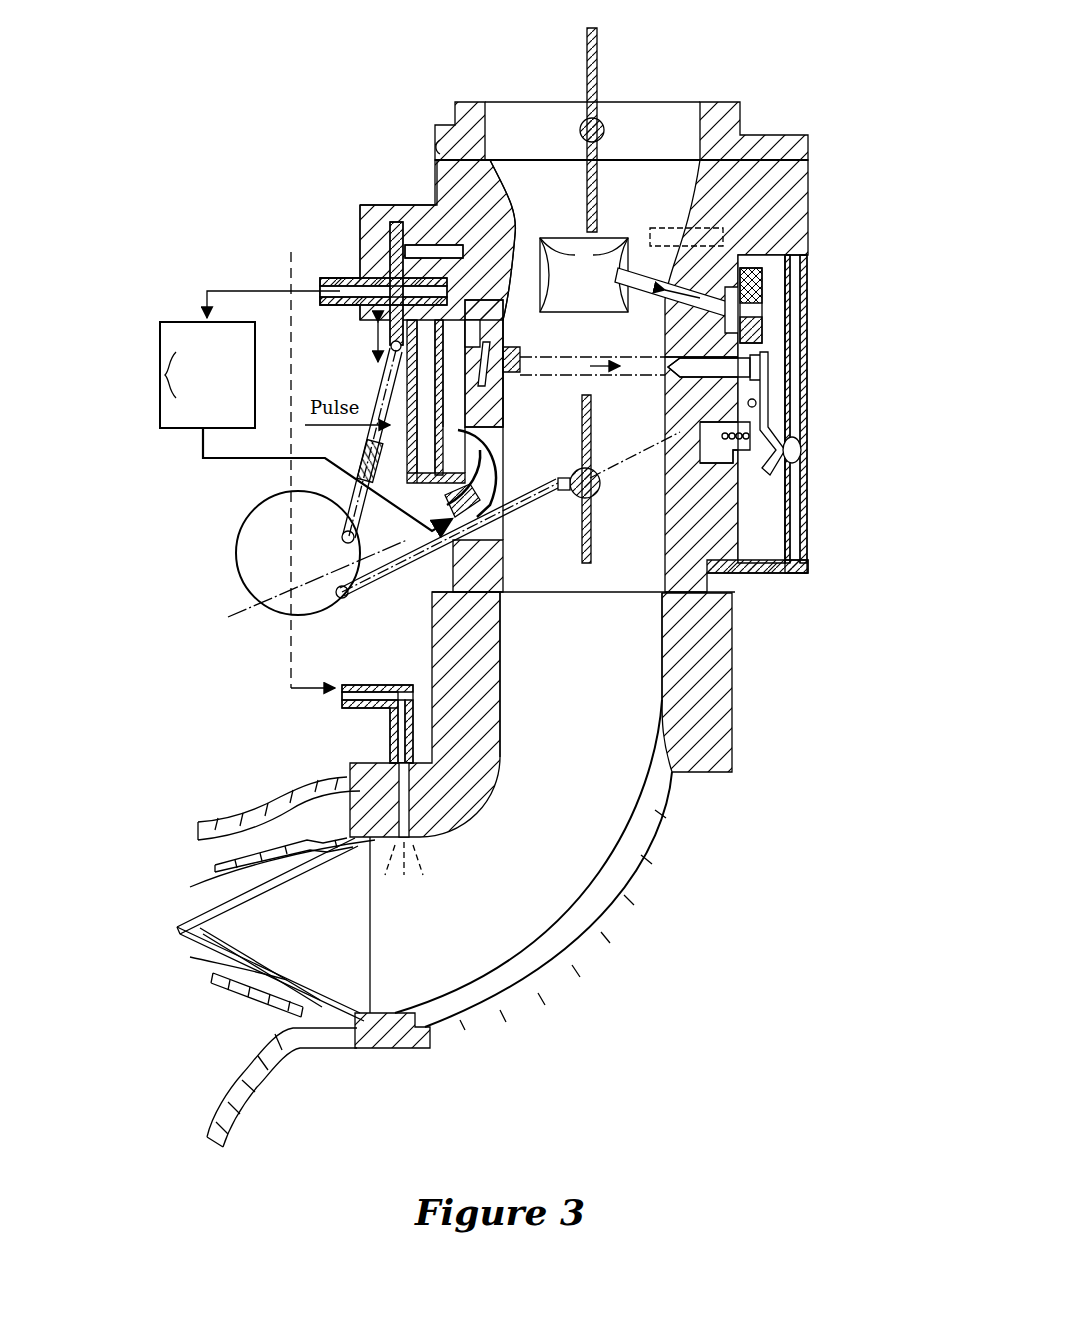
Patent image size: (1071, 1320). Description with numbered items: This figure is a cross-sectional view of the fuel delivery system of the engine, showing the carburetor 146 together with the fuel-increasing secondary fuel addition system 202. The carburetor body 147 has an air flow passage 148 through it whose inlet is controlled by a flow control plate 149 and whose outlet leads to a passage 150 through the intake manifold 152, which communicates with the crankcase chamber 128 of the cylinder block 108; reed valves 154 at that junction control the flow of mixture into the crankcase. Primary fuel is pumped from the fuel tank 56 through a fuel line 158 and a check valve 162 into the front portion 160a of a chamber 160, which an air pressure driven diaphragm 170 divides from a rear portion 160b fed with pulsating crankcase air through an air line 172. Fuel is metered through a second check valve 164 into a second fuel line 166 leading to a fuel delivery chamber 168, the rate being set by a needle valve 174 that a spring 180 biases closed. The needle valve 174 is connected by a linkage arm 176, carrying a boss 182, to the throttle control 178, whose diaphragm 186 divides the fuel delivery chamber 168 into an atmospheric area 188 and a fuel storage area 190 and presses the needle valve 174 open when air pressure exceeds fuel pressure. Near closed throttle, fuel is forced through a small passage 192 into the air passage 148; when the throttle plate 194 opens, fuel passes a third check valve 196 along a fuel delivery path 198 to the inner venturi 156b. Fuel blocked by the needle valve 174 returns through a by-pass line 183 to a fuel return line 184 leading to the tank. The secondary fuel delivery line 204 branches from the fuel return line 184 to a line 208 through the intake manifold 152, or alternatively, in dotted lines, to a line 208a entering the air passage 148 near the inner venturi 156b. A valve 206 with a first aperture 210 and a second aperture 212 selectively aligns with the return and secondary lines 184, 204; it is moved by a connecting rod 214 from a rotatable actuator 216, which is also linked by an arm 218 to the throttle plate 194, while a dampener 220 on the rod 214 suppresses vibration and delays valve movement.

The fuel tank 56 is at (175, 440).
The cylinder block 108 is at (260, 1050).
The crankcase chamber 128 is at (355, 1045).
The carburetor 146 is at (814, 90).
The body 147 is at (812, 178).
The air flow passage 148 is at (633, 540).
The flow control plate 149 is at (598, 68).
The passage 150 is at (640, 822).
The intake manifold 152 is at (578, 958).
The reed valves 154 is at (180, 915).
The inner venturi 156b is at (525, 238).
The fuel line 158 is at (222, 460).
The chamber 160 is at (260, 375).
The front portion 160a is at (450, 410).
The rear portion 160b is at (425, 392).
The check valve 162 is at (572, 492).
The second check valve 164 is at (520, 355).
The second fuel line 166 is at (648, 372).
The fuel delivery chamber 168 is at (780, 302).
The air pressure driven diaphragm 170 is at (520, 336).
The air line 172 is at (385, 545).
The needle valve 174 is at (742, 366).
The linkage arm 176 is at (803, 490).
The throttle control 178 is at (722, 413).
The spring 180 is at (800, 445).
The protrusion or boss 182 is at (805, 445).
The by-pass line 183 is at (497, 290).
The fuel return line 184 is at (360, 285).
The diaphragm 186 is at (775, 420).
The atmospheric area 188 is at (792, 315).
The fuel storage area 190 is at (764, 292).
The small passage 192 is at (785, 535).
The throttle plate 194 is at (592, 570).
The third check valve 196 is at (745, 288).
The fuel delivery path 198 is at (760, 262).
The secondary fuel addition system 202 is at (353, 172).
The secondary fuel delivery line 204 is at (430, 245).
The valve 206 is at (395, 255).
The line 208 is at (405, 806).
The line 208a is at (682, 228).
The first aperture 210 is at (400, 250).
The second aperture 212 is at (392, 340).
The connecting rod 214 is at (302, 592).
The rotatable actuator 216 is at (238, 567).
The arm 218 is at (300, 668).
The dampener 220 is at (365, 460).